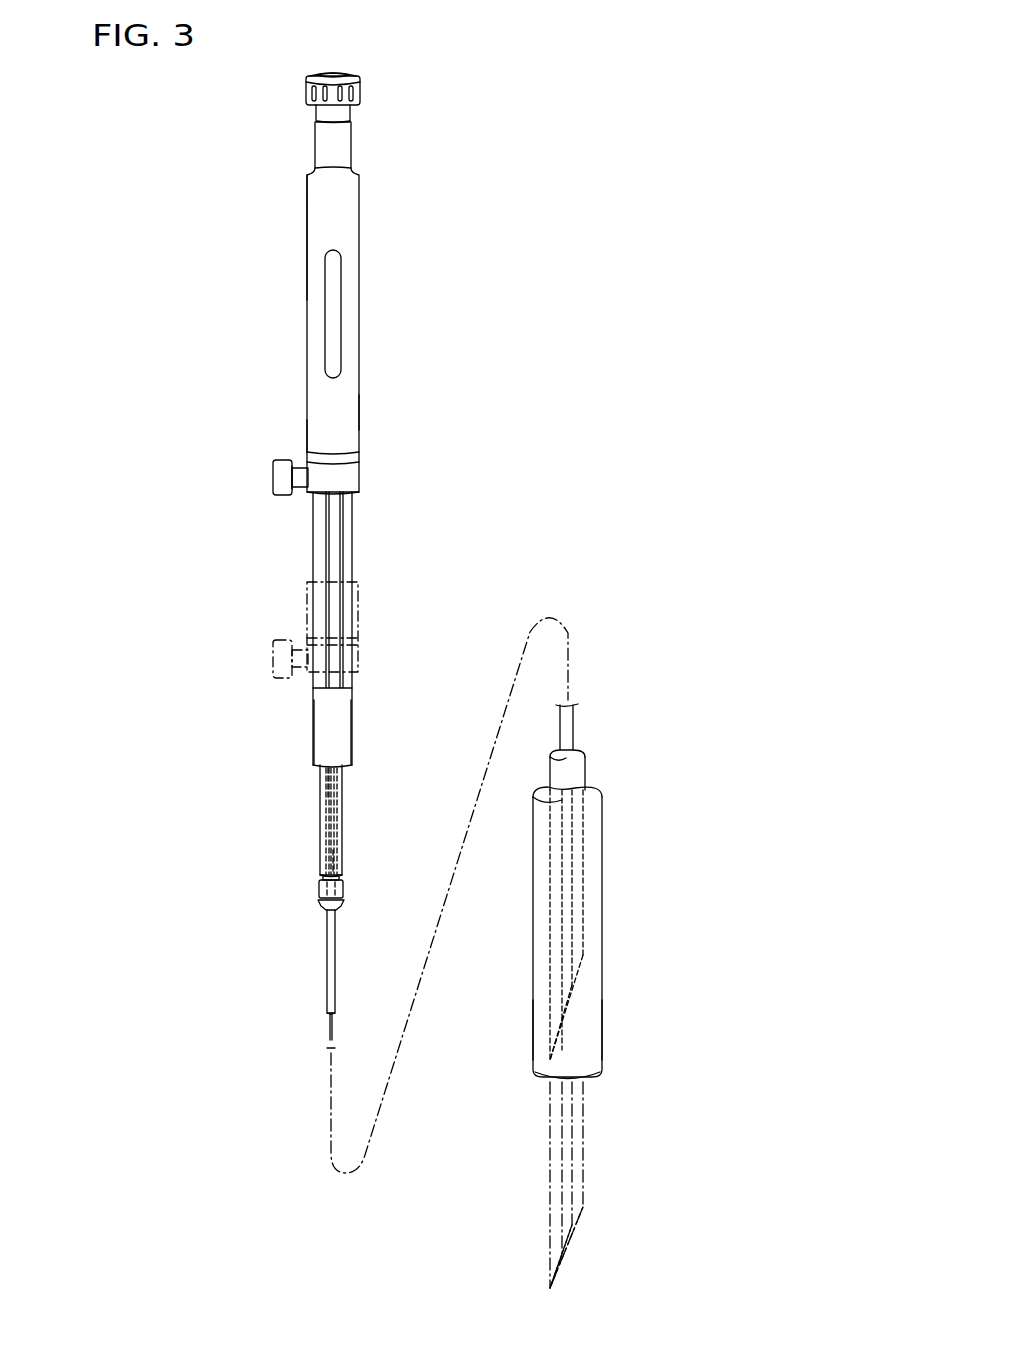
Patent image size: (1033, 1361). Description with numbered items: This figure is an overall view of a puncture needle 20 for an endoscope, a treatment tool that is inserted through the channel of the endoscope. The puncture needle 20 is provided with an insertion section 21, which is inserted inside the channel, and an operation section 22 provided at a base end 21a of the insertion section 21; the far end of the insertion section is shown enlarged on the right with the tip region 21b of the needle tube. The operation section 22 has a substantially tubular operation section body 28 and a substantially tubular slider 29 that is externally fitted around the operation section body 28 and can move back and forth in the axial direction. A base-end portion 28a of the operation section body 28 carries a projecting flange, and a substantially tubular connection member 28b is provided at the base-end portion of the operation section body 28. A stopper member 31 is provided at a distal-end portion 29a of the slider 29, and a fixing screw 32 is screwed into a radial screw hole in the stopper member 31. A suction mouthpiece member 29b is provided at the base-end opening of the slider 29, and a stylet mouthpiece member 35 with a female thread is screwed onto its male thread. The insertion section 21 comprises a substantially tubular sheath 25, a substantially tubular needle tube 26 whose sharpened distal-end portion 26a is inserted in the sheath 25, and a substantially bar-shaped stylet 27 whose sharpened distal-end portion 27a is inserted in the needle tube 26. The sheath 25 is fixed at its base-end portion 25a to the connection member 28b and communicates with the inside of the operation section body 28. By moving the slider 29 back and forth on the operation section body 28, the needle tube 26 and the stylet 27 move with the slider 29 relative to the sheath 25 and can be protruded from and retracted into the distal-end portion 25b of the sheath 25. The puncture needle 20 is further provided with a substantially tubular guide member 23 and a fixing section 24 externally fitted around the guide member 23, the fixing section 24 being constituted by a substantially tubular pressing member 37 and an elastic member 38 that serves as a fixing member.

The puncture needle 20 is at (662, 215).
The insertion section 21 is at (735, 887).
The base end of the insertion section 21a is at (335, 850).
The distal end of needle tube 21b is at (592, 1078).
The operation section 22 is at (365, 412).
The guide member 23 is at (340, 795).
The fixing section 24 is at (254, 837).
The sheath 25 is at (327, 940).
The base-end portion of the sheath 25a is at (330, 786).
The distal-end portion of the sheath 25b is at (533, 1013).
The needle tube 26 is at (330, 1027).
The distal-end portion of the needle tube 26a is at (553, 1052).
The stylet 27 is at (331, 1046).
The distal-end portion of the stylet 27a is at (572, 1018).
The operation section body 28 is at (352, 553).
The base-end portion of the operation section body 28a is at (352, 517).
The connection member 28b is at (345, 712).
The slider 29 is at (360, 268).
The distal-end portion of the slider 29a is at (307, 430).
The suction mouthpiece member 29b is at (307, 173).
The stopper member 31 is at (359, 478).
The fixing screw 32 is at (282, 478).
The stylet mouthpiece member 35 is at (360, 92).
The pressing member 37 is at (320, 822).
The elastic member 38 is at (320, 892).